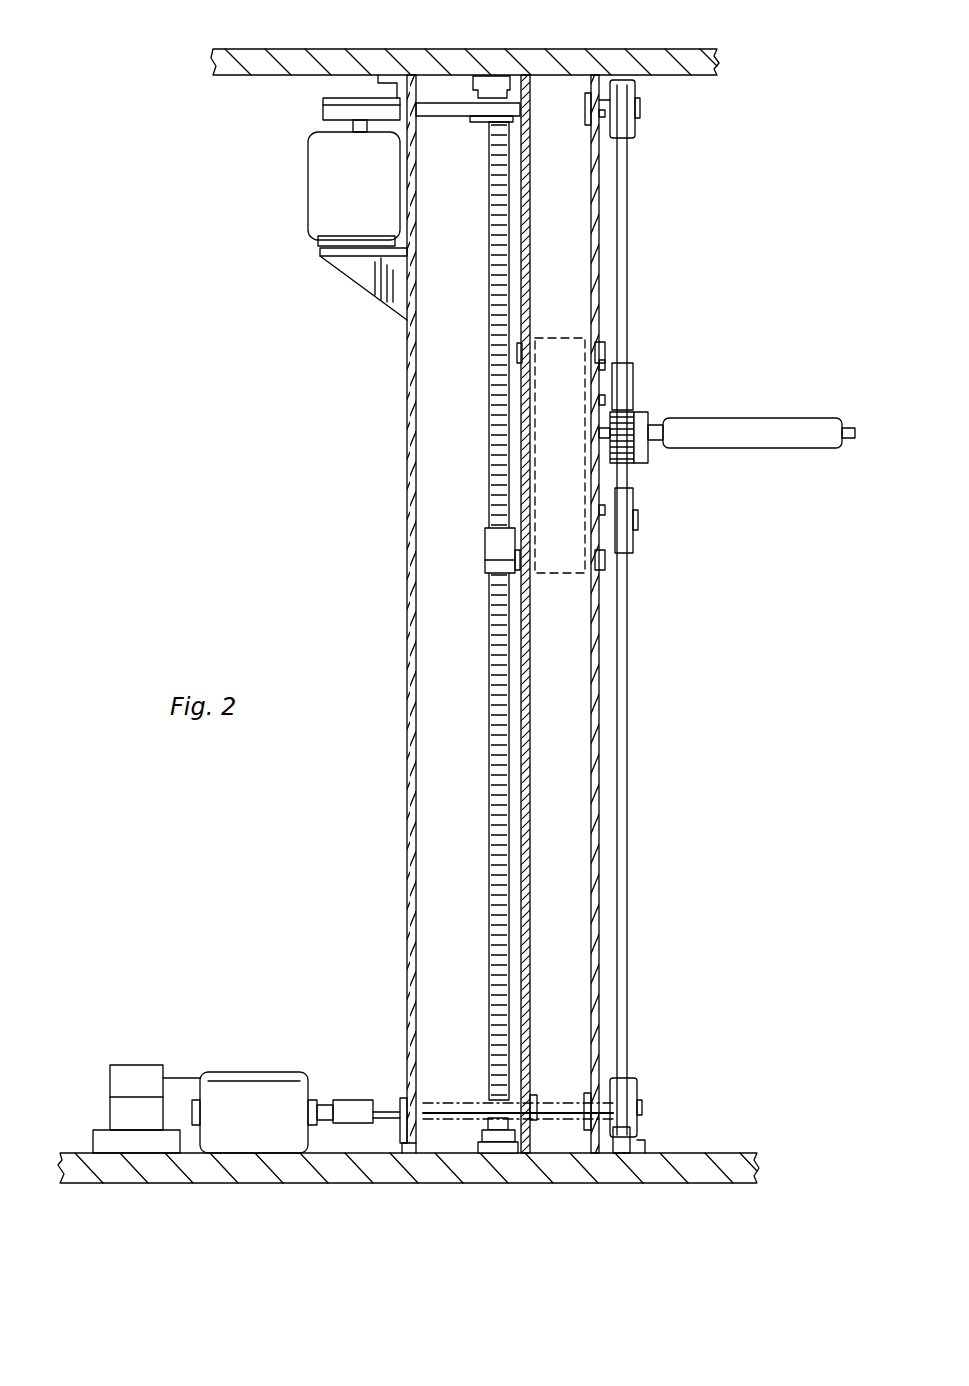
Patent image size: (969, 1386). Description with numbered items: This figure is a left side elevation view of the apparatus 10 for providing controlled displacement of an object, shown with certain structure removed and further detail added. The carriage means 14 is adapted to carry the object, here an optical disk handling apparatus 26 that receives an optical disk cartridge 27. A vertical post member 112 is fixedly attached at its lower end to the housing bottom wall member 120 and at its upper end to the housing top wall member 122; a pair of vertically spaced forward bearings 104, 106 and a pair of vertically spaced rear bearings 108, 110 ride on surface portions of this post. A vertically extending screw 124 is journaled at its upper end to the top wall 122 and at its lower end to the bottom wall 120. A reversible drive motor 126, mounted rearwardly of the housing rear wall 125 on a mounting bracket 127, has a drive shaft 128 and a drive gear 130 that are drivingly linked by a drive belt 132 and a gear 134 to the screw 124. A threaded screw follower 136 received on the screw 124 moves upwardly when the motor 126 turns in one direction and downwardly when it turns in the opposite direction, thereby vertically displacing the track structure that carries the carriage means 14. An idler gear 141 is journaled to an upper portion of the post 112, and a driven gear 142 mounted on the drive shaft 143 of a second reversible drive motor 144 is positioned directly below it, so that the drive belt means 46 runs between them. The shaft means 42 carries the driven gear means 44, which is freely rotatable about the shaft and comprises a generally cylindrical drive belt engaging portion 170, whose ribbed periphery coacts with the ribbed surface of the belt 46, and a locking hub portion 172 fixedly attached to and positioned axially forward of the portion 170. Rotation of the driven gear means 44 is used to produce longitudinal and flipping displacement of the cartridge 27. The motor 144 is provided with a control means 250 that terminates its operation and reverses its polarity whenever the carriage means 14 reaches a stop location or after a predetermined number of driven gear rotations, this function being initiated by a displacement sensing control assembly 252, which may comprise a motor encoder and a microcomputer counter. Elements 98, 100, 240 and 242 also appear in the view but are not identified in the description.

The apparatus 10 is at (778, 155).
The carriage means 14 is at (555, 330).
The optical disk handling apparatus 26 is at (742, 432).
The optical disk cartridge 27 is at (845, 440).
The shaft means 42 is at (655, 438).
The driven gear means 44 is at (763, 443).
The drive belt means 46 is at (632, 238).
The upper pulley 98 is at (636, 372).
The lower pulley 100 is at (637, 538).
The forward bearing 104 is at (607, 350).
The forward bearing 106 is at (607, 563).
The rear bearing 108 is at (518, 353).
The rear bearing 110 is at (488, 568).
The vertical post member 112 is at (593, 708).
The housing bottom wall member 120 is at (500, 1172).
The housing top wall member 122 is at (690, 56).
The screw 124 is at (488, 192).
The housing rear wall 125 is at (407, 682).
The reversible drive motor 126 is at (313, 205).
The mounting bracket 127 is at (365, 275).
The drive shaft 128 is at (353, 128).
The drive gear 130 is at (338, 108).
The drive belt 132 is at (440, 103).
The gear 134 is at (490, 90).
The threaded screw follower 136 is at (487, 545).
The idler gear 141 is at (641, 92).
The driven gear 142 is at (638, 1093).
The drive shaft 143 is at (328, 1125).
The reversible drive motor 144 is at (243, 1075).
The drive belt engaging portion 170 is at (640, 463).
The locking hub portion 172 is at (650, 415).
The pulley bracket 240 is at (605, 1130).
The mounting bracket 242 is at (645, 1142).
The control means 250 is at (130, 1078).
The displacement sensing control assembly 252 is at (120, 1113).